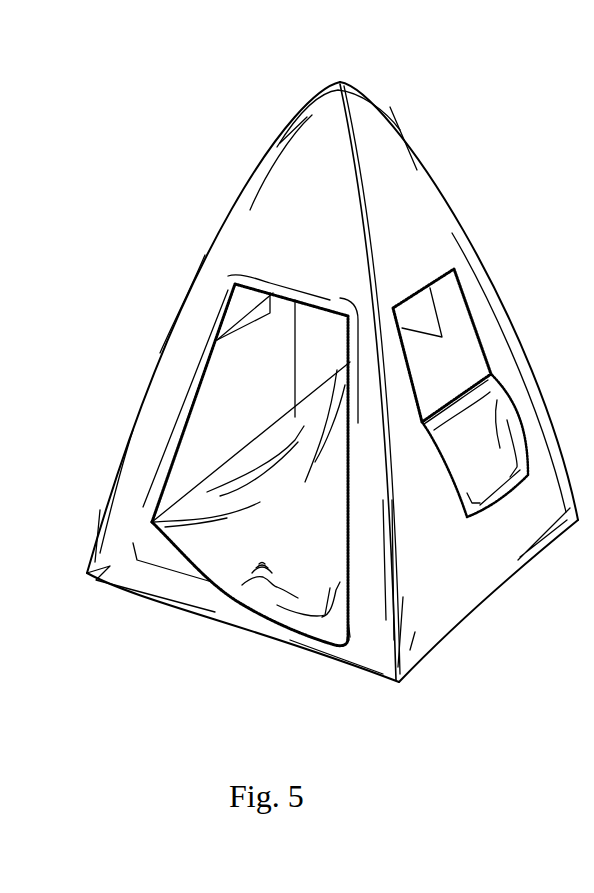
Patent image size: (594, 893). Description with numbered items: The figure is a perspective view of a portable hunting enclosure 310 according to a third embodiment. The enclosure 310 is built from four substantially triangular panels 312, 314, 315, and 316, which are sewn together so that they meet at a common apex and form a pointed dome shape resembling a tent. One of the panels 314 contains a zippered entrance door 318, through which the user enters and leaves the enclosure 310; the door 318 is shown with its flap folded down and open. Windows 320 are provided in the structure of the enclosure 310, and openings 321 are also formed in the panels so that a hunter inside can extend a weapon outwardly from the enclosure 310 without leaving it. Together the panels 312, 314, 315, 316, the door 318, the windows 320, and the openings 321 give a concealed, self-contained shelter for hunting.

The enclosure 310 is at (242, 112).
The triangular panel 312 is at (447, 547).
The triangular panel 314 is at (321, 244).
The triangular panel 315 is at (256, 412).
The triangular panel 316 is at (464, 377).
The zippered entrance door 318 is at (311, 545).
The window 320 is at (243, 335).
The opening 321 is at (440, 313).